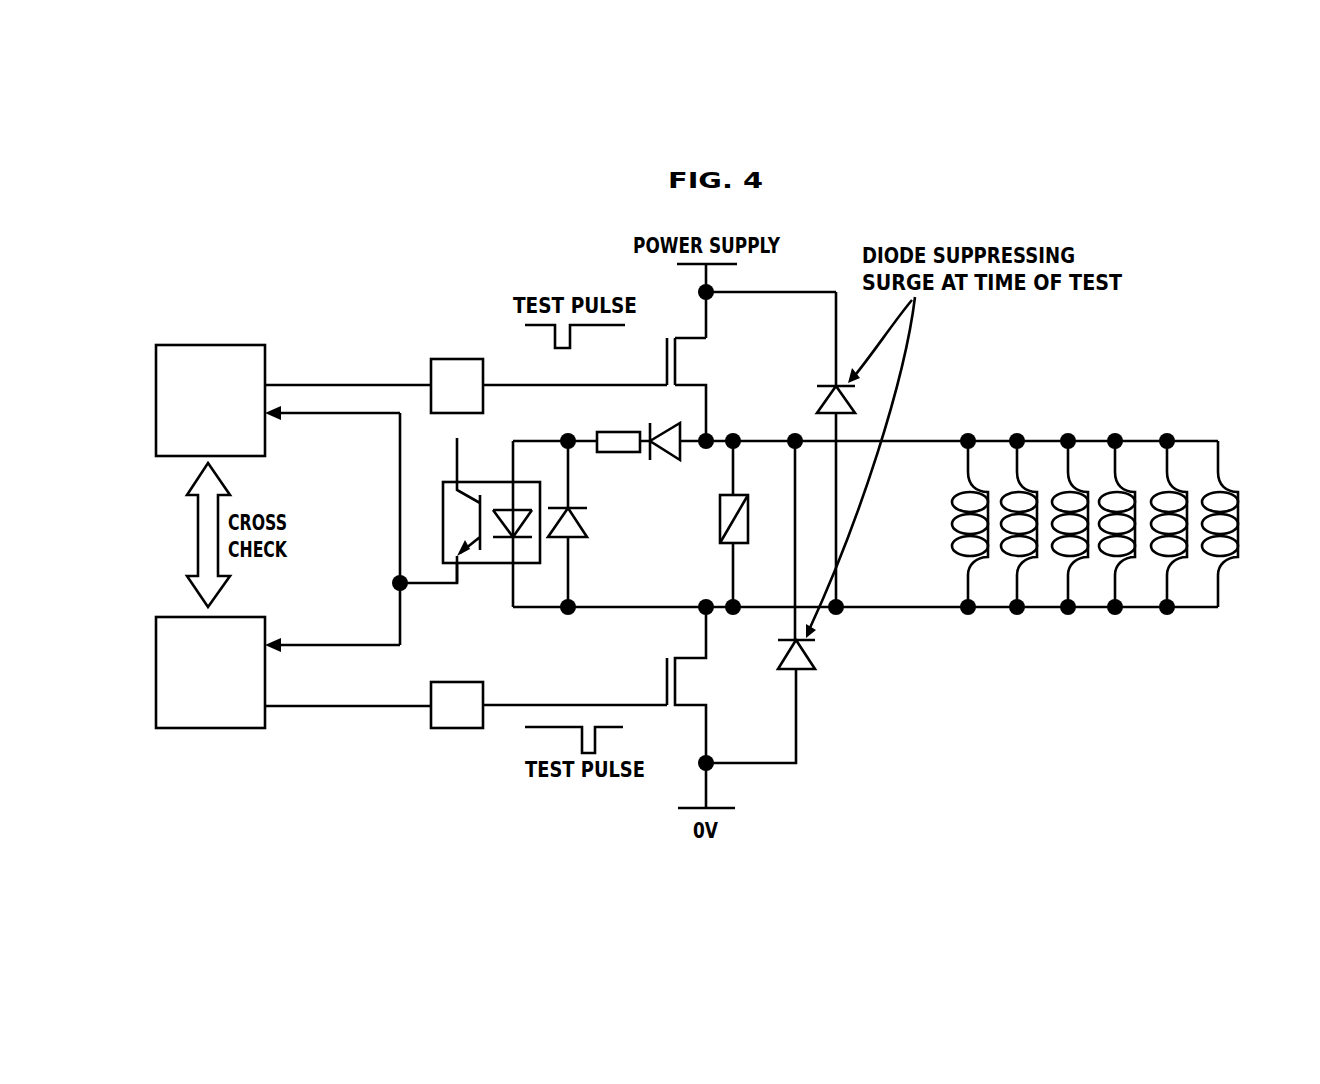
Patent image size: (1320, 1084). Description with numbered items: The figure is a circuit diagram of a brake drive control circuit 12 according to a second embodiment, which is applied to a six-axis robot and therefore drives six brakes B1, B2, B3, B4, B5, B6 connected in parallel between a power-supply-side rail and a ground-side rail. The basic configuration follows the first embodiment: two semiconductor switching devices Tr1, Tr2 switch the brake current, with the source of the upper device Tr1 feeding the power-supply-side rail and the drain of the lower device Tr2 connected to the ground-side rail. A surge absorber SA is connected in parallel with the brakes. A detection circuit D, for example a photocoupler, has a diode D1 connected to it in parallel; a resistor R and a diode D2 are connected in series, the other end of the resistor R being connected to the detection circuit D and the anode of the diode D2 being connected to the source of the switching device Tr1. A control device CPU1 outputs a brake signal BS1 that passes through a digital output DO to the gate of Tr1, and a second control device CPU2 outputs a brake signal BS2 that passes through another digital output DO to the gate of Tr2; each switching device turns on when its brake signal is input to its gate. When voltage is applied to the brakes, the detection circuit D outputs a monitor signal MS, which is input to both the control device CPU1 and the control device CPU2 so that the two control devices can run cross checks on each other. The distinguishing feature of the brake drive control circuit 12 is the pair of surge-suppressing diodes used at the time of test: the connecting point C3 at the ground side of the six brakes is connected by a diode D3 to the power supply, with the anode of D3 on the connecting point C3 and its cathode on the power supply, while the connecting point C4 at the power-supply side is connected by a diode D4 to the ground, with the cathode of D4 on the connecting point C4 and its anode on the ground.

The brake drive control circuit 12 is at (1101, 458).
The brake B1 is at (976, 524).
The brake B2 is at (1025, 524).
The brake B3 is at (1075, 524).
The brake B4 is at (1123, 524).
The brake B5 is at (1174, 524).
The brake B6 is at (1226, 524).
The semiconductor switching device Tr1 is at (706, 389).
The semiconductor switching device Tr2 is at (706, 707).
The detection circuit D is at (491, 510).
The diode D1 is at (583, 524).
The diode D2 is at (665, 456).
The diode D3 is at (821, 449).
The diode D4 is at (776, 701).
The resistor R is at (618, 457).
The surge absorber SA is at (717, 524).
The connecting point C3 is at (836, 607).
The connecting point C4 is at (792, 438).
The brake signal BS1 is at (575, 401).
The brake signal BS2 is at (575, 691).
The monitor signal MS is at (361, 529).
The digital output DO is at (374, 543).
The control device CPU1 is at (210, 400).
The control device CPU2 is at (210, 672).